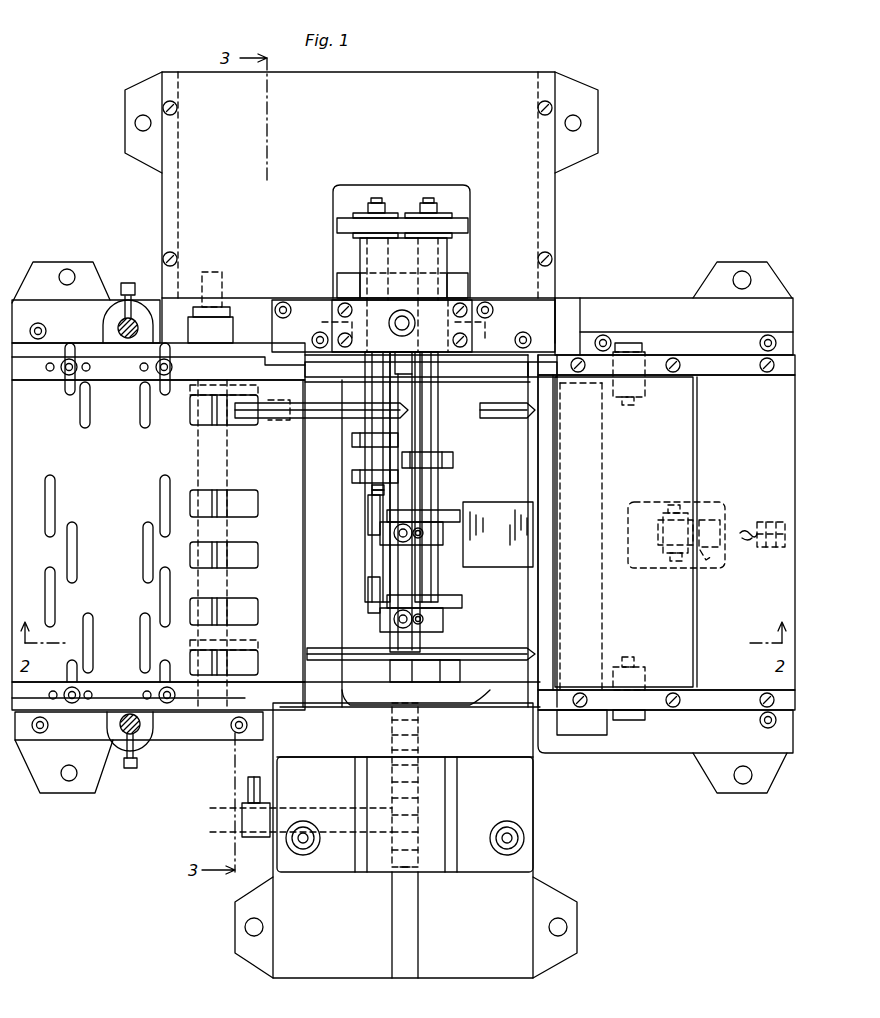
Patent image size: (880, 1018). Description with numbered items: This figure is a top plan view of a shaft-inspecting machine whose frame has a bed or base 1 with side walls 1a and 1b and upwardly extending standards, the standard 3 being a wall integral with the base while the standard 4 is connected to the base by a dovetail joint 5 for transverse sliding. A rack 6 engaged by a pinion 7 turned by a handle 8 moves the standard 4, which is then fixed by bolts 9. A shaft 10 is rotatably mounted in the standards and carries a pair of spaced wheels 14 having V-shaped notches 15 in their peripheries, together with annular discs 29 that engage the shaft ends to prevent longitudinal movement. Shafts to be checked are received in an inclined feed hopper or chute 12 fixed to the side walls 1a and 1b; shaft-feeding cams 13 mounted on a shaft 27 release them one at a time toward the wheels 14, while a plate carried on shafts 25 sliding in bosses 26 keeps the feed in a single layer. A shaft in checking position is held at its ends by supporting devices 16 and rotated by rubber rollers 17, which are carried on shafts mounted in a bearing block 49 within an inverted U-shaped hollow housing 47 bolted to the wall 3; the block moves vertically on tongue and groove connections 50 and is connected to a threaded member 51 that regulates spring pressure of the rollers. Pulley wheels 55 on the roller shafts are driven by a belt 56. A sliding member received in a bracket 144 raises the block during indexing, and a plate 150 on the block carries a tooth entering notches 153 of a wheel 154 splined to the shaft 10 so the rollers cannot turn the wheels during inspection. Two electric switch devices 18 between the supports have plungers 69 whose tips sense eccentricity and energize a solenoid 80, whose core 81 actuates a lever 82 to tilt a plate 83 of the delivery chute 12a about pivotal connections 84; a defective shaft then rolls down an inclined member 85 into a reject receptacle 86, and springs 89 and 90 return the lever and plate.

The bed or base 1 is at (317, 972).
The side wall 1a is at (55, 325).
The side wall 1b is at (58, 730).
The standard 3 is at (553, 313).
The standard 4 is at (497, 750).
The dovetail joint 5 is at (416, 892).
The rack 6 is at (392, 768).
The pinion 7 is at (392, 870).
The handle 8 is at (248, 790).
The bolts 9 is at (310, 842).
The shaft 10 is at (421, 560).
The feed hopper or chute 12 is at (50, 454).
The delivery chute 12a is at (787, 454).
The shaft-feeding cams 13 is at (230, 412).
The spaced wheels 14 is at (322, 408).
The notches 15 is at (492, 412).
The shaft-supporting devices 16 is at (396, 401).
The rotatable rollers 17 is at (352, 476).
The electric switch devices 18 is at (375, 596).
The shafts 25 is at (132, 322).
The bosses 26 is at (110, 312).
The shaft 27 is at (215, 306).
The annular disc 29 is at (525, 383).
The hollow housing 47 is at (330, 305).
The bearing block 49 is at (434, 290).
The tongue and groove connections 50 is at (333, 326).
The threaded member 51 is at (402, 311).
The pulley wheel 55 is at (412, 212).
The belt 56 is at (340, 228).
The plungers 69 is at (398, 620).
The solenoid 80 is at (706, 508).
The core 81 is at (670, 505).
The lever 82 is at (662, 535).
The plate 83 is at (680, 418).
The pivotal connections 84 is at (652, 325).
The inclined member 85 is at (528, 568).
The reject bin or receptacle 86 is at (582, 737).
The spring 89 is at (700, 558).
The spring 90 is at (745, 530).
The bracket 144 is at (345, 277).
The plate 150 is at (405, 360).
The notches 153 is at (310, 360).
The wheel 154 is at (505, 363).